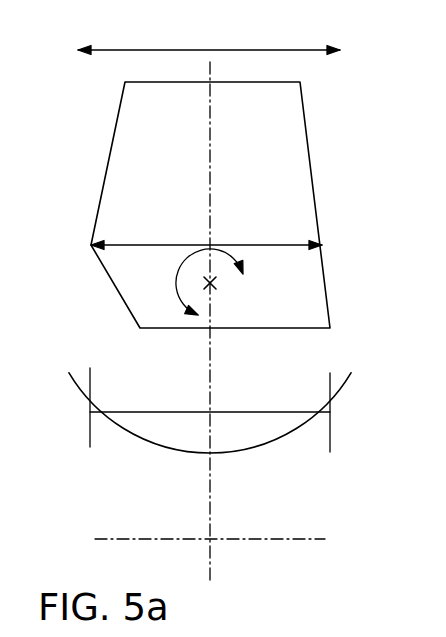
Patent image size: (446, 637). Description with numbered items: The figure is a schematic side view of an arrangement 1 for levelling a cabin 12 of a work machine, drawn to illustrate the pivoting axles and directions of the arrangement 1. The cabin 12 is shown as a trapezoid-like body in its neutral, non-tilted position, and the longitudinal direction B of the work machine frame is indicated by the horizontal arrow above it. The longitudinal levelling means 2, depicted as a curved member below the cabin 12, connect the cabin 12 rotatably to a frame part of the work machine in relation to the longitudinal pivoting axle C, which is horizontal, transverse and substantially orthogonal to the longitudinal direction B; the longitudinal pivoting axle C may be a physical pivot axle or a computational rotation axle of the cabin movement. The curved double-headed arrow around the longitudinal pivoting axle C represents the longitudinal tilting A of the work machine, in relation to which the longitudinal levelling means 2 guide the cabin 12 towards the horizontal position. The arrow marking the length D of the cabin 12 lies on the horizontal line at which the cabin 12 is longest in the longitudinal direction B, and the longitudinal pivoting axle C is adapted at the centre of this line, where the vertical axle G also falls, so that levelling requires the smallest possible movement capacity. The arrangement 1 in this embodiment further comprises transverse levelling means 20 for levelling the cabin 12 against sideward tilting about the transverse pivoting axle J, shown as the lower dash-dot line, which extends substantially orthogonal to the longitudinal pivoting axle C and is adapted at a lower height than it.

The arrangement 1 is at (372, 415).
The longitudinal levelling means 2 is at (73, 382).
The cabin 12 is at (270, 175).
The transverse levelling means 20 is at (90, 437).
The longitudinal tilting A is at (190, 282).
The longitudinal direction B is at (209, 28).
The longitudinal pivoting axle C is at (217, 284).
The length of the cabin D is at (206, 227).
The vertical axle G is at (211, 387).
The transverse pivoting axle J is at (232, 539).